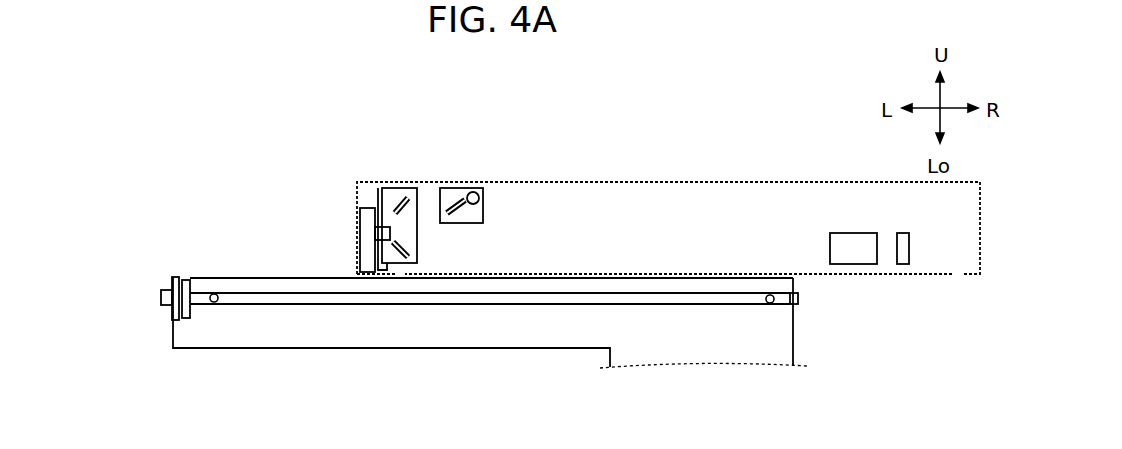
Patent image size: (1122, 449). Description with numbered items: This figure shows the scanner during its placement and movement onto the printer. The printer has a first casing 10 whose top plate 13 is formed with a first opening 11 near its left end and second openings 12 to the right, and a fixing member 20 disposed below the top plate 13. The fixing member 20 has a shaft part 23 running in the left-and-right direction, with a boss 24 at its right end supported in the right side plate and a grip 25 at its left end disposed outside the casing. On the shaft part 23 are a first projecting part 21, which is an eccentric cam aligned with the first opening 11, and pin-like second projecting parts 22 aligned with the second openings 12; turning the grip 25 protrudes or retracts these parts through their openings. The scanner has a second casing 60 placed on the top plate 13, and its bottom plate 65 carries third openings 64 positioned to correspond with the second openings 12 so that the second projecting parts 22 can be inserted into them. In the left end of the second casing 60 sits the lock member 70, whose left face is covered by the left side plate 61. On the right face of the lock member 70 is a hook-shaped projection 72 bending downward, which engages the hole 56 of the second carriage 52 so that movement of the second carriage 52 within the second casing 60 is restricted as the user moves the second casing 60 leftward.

The first casing 10 is at (152, 331).
The first opening 11 is at (176, 277).
The second opening 12 is at (213, 280).
The top plate 13 is at (280, 277).
The fixing member 20 is at (499, 315).
The first projecting part 21 is at (187, 318).
The second projecting part 22 is at (217, 303).
The shaft part 23 is at (423, 305).
The boss 24 is at (798, 298).
The grip 25 is at (166, 289).
The second carriage 52 is at (415, 258).
The hole 56 is at (390, 218).
The second casing 60 is at (350, 160).
The left side plate 61 is at (358, 250).
The third opening 64 is at (402, 272).
The bottom plate 65 is at (970, 275).
The lock member 70 is at (365, 207).
The projection 72 is at (390, 232).